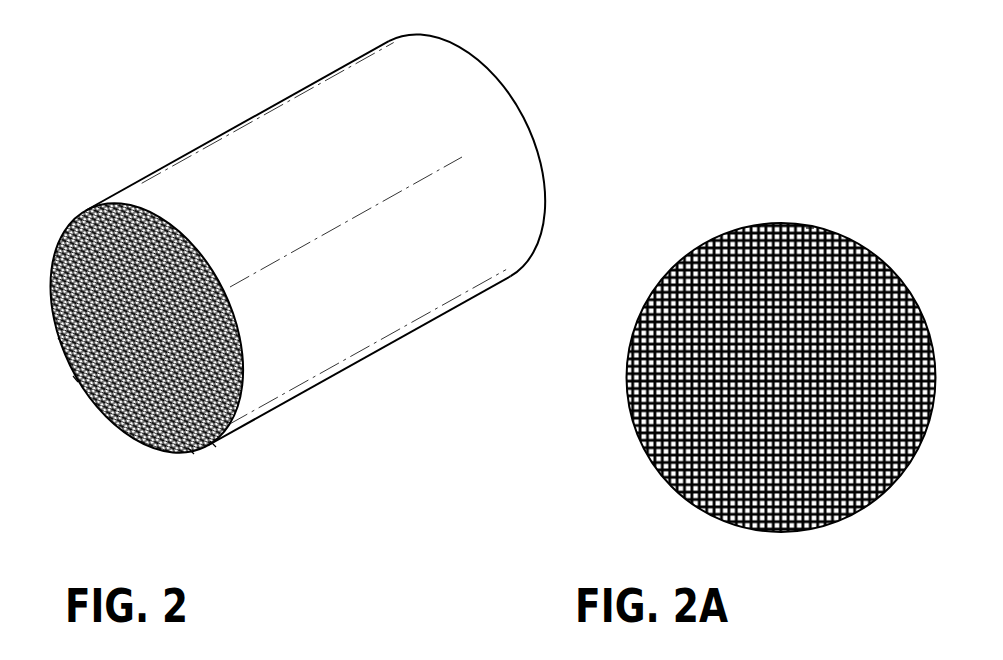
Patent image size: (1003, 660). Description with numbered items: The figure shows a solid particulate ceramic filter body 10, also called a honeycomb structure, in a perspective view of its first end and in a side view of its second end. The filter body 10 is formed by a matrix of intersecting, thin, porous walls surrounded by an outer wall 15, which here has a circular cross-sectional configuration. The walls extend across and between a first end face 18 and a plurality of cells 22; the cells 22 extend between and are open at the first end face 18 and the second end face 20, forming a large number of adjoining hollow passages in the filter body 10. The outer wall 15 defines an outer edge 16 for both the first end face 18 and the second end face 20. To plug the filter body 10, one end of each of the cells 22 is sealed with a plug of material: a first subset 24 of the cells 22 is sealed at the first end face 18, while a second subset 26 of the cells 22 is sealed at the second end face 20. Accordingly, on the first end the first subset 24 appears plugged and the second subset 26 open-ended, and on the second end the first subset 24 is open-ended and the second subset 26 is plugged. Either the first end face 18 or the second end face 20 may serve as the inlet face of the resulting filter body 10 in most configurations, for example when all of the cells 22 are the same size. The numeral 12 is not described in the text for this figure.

In FIG. 2A, the filter body 10 is at (810, 183).
In FIG. 2, the inlet end face 12 is at (54, 234).
In FIG. 2, the outer wall 15 is at (243, 147).
In FIG. 2, the outer edge 16 is at (118, 425).
In FIG. 2, the first end face 18 is at (213, 445).
In FIG. 2, the second end face 20 is at (540, 130).
In FIG. 2A, the second end face 20 is at (915, 298).
In FIG. 2, the cells 22 is at (61, 340).
In FIG. 2, the first subset of cells 24 is at (70, 370).
In FIG. 2A, the first subset of cells 24 is at (757, 226).
In FIG. 2, the second subset of cells 26 is at (188, 449).
In FIG. 2A, the second subset of cells 26 is at (810, 228).